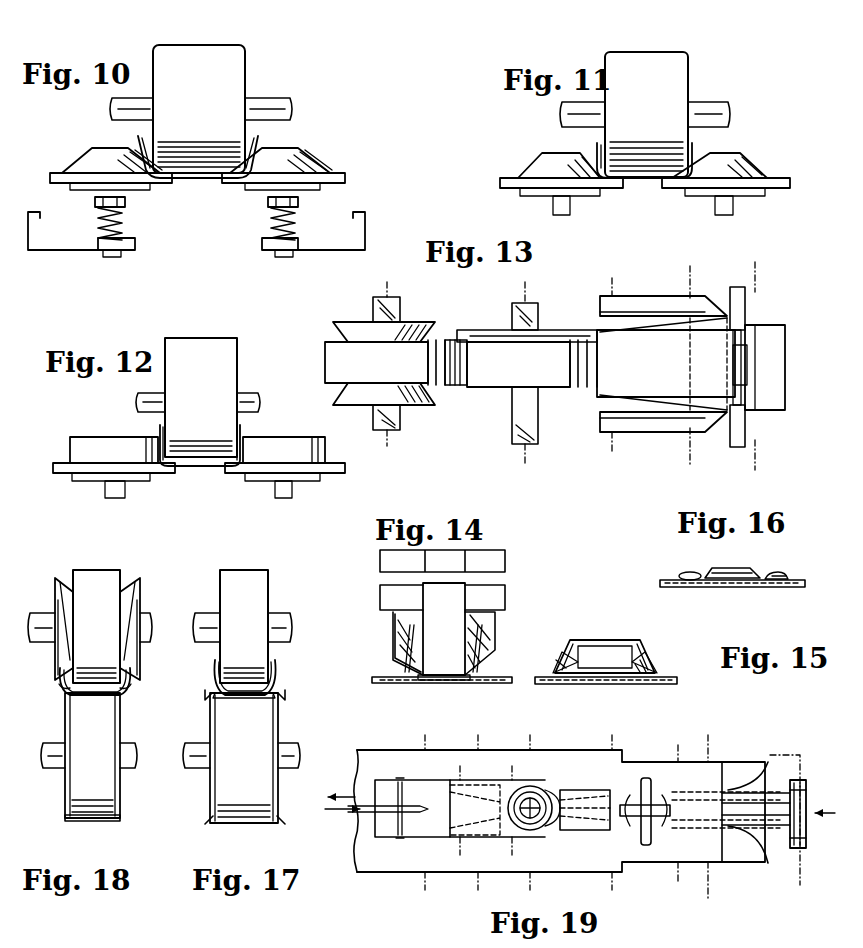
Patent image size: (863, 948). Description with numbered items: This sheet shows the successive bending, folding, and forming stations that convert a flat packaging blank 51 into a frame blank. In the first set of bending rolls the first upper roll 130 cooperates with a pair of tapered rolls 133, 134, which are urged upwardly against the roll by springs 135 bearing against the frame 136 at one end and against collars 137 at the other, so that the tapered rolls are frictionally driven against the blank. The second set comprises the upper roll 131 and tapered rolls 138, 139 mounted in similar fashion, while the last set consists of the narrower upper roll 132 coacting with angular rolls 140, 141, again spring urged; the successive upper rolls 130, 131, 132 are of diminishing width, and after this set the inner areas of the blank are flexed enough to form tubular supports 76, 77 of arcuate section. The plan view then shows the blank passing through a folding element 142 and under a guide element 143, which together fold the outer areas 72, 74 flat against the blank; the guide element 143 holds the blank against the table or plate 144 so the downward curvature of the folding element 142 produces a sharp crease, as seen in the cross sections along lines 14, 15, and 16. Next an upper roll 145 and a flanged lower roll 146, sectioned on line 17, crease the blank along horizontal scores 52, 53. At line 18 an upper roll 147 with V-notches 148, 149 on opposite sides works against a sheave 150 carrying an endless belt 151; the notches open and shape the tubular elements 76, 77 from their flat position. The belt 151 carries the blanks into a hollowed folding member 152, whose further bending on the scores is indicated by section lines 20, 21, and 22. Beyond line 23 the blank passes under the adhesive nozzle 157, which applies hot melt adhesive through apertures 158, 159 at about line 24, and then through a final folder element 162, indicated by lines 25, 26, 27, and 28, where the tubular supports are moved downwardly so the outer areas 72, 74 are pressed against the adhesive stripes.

In FIG. 10, the first upper roll 130 is at (213, 62).
In FIG. 11, the upper roll 131 is at (650, 65).
In FIG. 12, the upper roll 132 is at (207, 350).
In FIG. 10, the tapered roll 133 is at (95, 152).
In FIG. 10, the tapered roll 134 is at (315, 160).
In FIG. 10, the spring 135 is at (100, 225).
In FIG. 10, the frame 136 is at (132, 246).
In FIG. 10, the collar 137 is at (126, 203).
In FIG. 11, the tapered roll 138 is at (540, 160).
In FIG. 11, the tapered roll 139 is at (750, 162).
In FIG. 12, the angular roll 140 is at (80, 440).
In FIG. 12, the angular roll 141 is at (290, 446).
In FIG. 13, the folding element 142 is at (682, 388).
In FIG. 14, the folding element 142 is at (497, 626).
In FIG. 15, the folding element 142 is at (640, 645).
In FIG. 16, the folding element 142 is at (732, 568).
In FIG. 13, the guide element 143 is at (744, 340).
In FIG. 14, the guide element 143 is at (461, 606).
In FIG. 15, the guide element 143 is at (600, 670).
In FIG. 14, the table or plate 144 is at (452, 684).
In FIG. 15, the table or plate 144 is at (605, 684).
In FIG. 16, the table or plate 144 is at (752, 588).
In FIG. 13, the upper roll 145 is at (490, 352).
In FIG. 17, the upper roll 145 is at (252, 578).
In FIG. 13, the flanged lower roll 146 is at (545, 338).
In FIG. 17, the flanged lower roll 146 is at (258, 730).
In FIG. 13, the upper roll 147 is at (345, 350).
In FIG. 18, the upper roll 147 is at (97, 578).
In FIG. 13, the V-notch 148 is at (398, 398).
In FIG. 18, the V-notch 148 is at (60, 583).
In FIG. 13, the V-notch 149 is at (366, 328).
In FIG. 18, the V-notch 149 is at (126, 586).
In FIG. 18, the sheave 150 is at (122, 793).
In FIG. 18, the endless belt 151 is at (100, 821).
In FIG. 19, the endless belt 151 is at (820, 790).
In FIG. 19, the folding member 152 is at (737, 840).
In FIG. 19, the adhesive nozzle 157 is at (543, 790).
In FIG. 19, the aperture 158 is at (538, 832).
In FIG. 19, the aperture 159 is at (542, 795).
In FIG. 19, the final folder element 162 is at (460, 812).
In FIG. 10, the packaging blank 51 is at (252, 153).
In FIG. 11, the packaging blank 51 is at (697, 156).
In FIG. 12, the packaging blank 51 is at (243, 436).
In FIG. 13, the packaging blank 51 is at (778, 374).
In FIG. 14, the packaging blank 51 is at (406, 662).
In FIG. 15, the packaging blank 51 is at (656, 670).
In FIG. 16, the packaging blank 51 is at (789, 577).
In FIG. 17, the packaging blank 51 is at (268, 670).
In FIG. 18, the packaging blank 51 is at (128, 698).
In FIG. 17, the horizontal score 52 is at (276, 696).
In FIG. 17, the horizontal score 53 is at (209, 700).
In FIG. 13, the outer area 72 is at (608, 306).
In FIG. 15, the outer area 72 is at (650, 666).
In FIG. 16, the outer area 72 is at (778, 572).
In FIG. 13, the outer area 74 is at (612, 413).
In FIG. 15, the outer area 74 is at (558, 664).
In FIG. 16, the outer area 74 is at (688, 574).
In FIG. 18, the tubular support 76 is at (132, 685).
In FIG. 18, the tubular support 77 is at (60, 690).
In FIG. 13, the section line 14- 14 is at (755, 268).
In FIG. 13, the section line 15- 15 is at (690, 280).
In FIG. 13, the section line 16- 16 is at (612, 288).
In FIG. 13, the section line 17- 17 is at (525, 282).
In FIG. 13, the section line 18- 18 is at (387, 282).
In FIG. 19, the section line 20- 20 is at (770, 755).
In FIG. 19, the section line 21- 21 is at (708, 735).
In FIG. 19, the section line 22- 22 is at (678, 746).
In FIG. 19, the section line 23- 23 is at (612, 746).
In FIG. 19, the section line 24- 24 is at (530, 746).
In FIG. 19, the section line 25- 25 is at (495, 812).
In FIG. 19, the section line 26- 26 is at (478, 746).
In FIG. 19, the section line 27- 27 is at (460, 766).
In FIG. 19, the section line 28- 28 is at (425, 746).